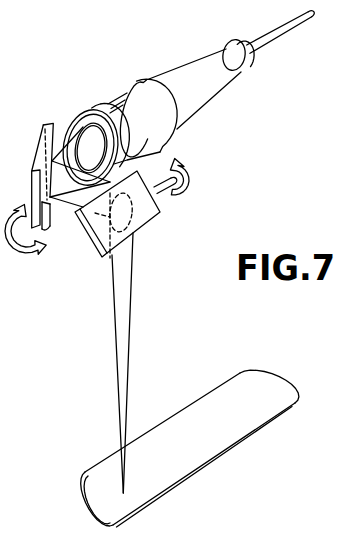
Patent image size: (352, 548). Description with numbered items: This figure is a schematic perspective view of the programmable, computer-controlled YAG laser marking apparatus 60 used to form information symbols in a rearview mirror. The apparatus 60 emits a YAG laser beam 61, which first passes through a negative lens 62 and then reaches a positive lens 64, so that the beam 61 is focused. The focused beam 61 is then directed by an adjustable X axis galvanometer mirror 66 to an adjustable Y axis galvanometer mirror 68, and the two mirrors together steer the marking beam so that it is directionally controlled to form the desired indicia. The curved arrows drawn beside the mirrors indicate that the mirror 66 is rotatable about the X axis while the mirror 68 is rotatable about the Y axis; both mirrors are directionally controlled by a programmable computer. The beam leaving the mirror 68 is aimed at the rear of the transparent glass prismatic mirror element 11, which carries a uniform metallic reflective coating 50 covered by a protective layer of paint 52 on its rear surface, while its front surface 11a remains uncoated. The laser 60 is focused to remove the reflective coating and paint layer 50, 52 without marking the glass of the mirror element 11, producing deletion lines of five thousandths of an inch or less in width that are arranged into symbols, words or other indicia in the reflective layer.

The laser marking apparatus 60 is at (179, 46).
The YAG laser beam 61 is at (262, 37).
The negative lens 62 is at (245, 72).
The positive lens 64 is at (77, 135).
The X axis galvanometer mirror 66 is at (45, 124).
The Y axis galvanometer mirror 68 is at (150, 208).
The prismatic mirror element 11 is at (193, 397).
The uncoated front surface 11a is at (114, 526).
The reflective coating 50 is at (198, 452).
The layer of paint 52 is at (190, 452).